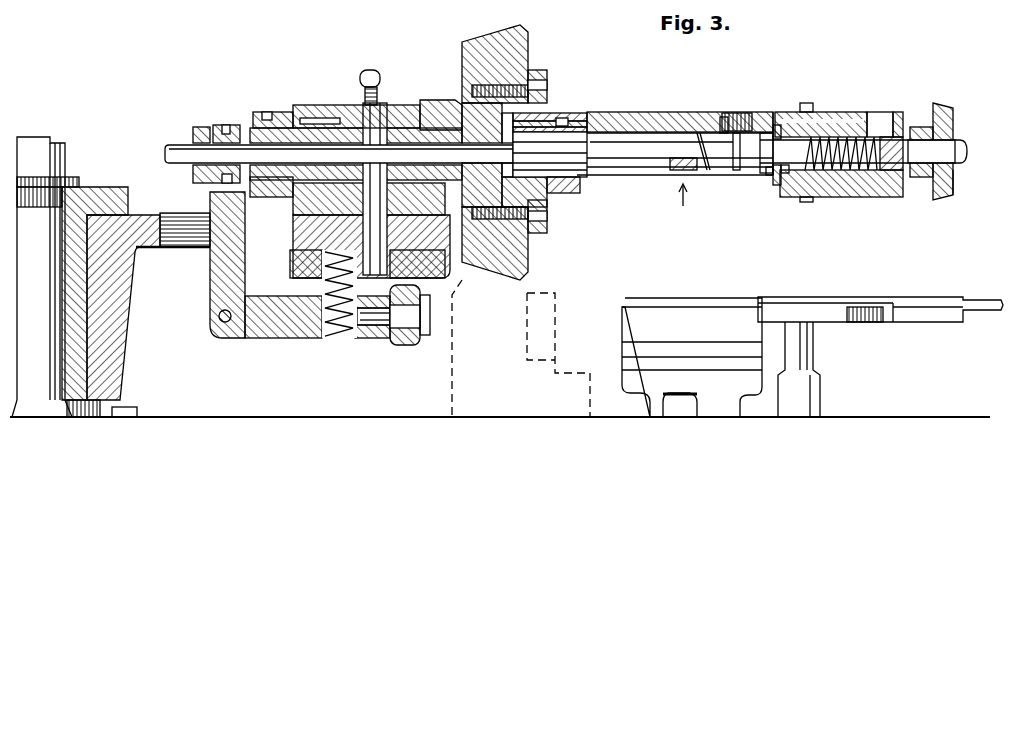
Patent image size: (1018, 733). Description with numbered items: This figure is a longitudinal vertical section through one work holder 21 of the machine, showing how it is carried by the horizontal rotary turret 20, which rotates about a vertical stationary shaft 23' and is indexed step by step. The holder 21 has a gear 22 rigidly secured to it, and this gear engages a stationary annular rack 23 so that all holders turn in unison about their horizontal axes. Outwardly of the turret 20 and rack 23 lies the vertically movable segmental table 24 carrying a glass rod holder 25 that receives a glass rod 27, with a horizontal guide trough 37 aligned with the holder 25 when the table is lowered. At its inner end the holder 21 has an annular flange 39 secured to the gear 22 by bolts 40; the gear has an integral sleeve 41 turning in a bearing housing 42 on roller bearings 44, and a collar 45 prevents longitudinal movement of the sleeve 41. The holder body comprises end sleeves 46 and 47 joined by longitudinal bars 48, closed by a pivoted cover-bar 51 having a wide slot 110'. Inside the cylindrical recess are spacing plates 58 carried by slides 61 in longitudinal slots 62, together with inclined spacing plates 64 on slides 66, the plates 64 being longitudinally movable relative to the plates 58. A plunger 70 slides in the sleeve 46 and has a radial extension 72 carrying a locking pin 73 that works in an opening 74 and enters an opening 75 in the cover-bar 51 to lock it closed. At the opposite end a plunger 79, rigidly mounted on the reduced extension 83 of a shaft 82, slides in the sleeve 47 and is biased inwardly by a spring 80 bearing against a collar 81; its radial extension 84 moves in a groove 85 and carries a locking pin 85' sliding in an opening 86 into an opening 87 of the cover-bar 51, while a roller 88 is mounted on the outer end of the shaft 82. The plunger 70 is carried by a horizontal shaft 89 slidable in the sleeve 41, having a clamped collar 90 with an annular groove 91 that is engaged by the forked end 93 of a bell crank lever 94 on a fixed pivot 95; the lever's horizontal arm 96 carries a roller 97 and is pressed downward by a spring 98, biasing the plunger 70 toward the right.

The horizontal rotary turret 20 is at (305, 240).
The work holder 21 is at (696, 200).
The gear 22 is at (531, 56).
The stationary annular rack 23 is at (521, 341).
The vertical stationary shaft 23' is at (74, 259).
The horizontal segmental table 24 is at (628, 372).
The glass rod holder 25 is at (624, 324).
The glass rod 27 is at (838, 297).
The horizontal guide trough 37 is at (897, 324).
The annular flange 39 is at (546, 230).
The bolt 40 is at (548, 82).
The sleeve 41 is at (330, 105).
The bearing housing 42 is at (402, 103).
The roller bearings 44 is at (307, 118).
The collar 45 is at (261, 112).
The sleeve 46 is at (581, 186).
The sleeve 47 is at (778, 186).
The longitudinal bar 48 is at (634, 178).
The cover-bar 51 is at (674, 118).
The spacing plate 58 is at (745, 118).
The radial slide 61 is at (745, 170).
The longitudinal slot 62 is at (765, 173).
The second spacing plate 64 is at (701, 134).
The slide 66 is at (680, 166).
The plunger 70 is at (579, 148).
The radial extension 72 is at (546, 121).
The locking pin 73 is at (560, 116).
The opening 74 is at (566, 127).
The opening 75 is at (602, 118).
The plunger 79 is at (781, 186).
The spring 80 is at (841, 197).
The collar 81 is at (899, 118).
The shaft 82 is at (951, 176).
The reduced extension 83 is at (770, 176).
The radial extension 84 is at (851, 113).
The groove 85 is at (887, 110).
The locking pin 85' is at (841, 109).
The opening 86 is at (807, 108).
The opening 87 is at (777, 118).
The roller 88 is at (953, 112).
The horizontal shaft 89 is at (176, 150).
The collar 90 is at (218, 127).
The annular groove 91 is at (232, 125).
The forked end 93 is at (215, 189).
The bell crank lever 94 is at (220, 270).
The fixed pivot 95 is at (218, 318).
The horizontal arm 96 is at (297, 338).
The roller 97 is at (410, 347).
The spring 98 is at (341, 320).
The wide slot 110' is at (744, 95).